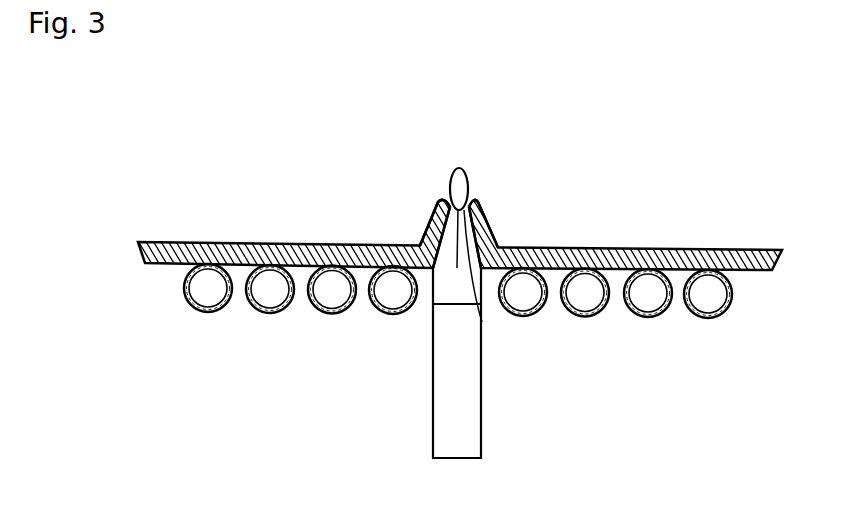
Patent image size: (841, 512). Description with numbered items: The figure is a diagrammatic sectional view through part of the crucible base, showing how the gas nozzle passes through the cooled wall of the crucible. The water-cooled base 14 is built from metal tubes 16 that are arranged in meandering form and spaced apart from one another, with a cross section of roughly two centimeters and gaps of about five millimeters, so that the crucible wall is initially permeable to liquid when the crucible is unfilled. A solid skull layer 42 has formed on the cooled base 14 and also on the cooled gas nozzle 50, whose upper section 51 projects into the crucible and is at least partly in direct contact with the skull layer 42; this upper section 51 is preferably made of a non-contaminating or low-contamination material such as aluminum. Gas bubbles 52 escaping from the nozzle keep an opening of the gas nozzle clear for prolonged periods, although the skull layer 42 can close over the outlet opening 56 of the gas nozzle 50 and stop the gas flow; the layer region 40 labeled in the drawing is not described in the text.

The water-cooled base 14 is at (705, 320).
The metal tubes 16 is at (270, 315).
The plate 40 is at (286, 179).
The skull layer 42 is at (200, 243).
The gas nozzle 50 is at (433, 381).
The upper section of the gas nozzle 51 is at (436, 210).
The gas bubbles 52 is at (469, 190).
The outlet opening 56 is at (482, 322).